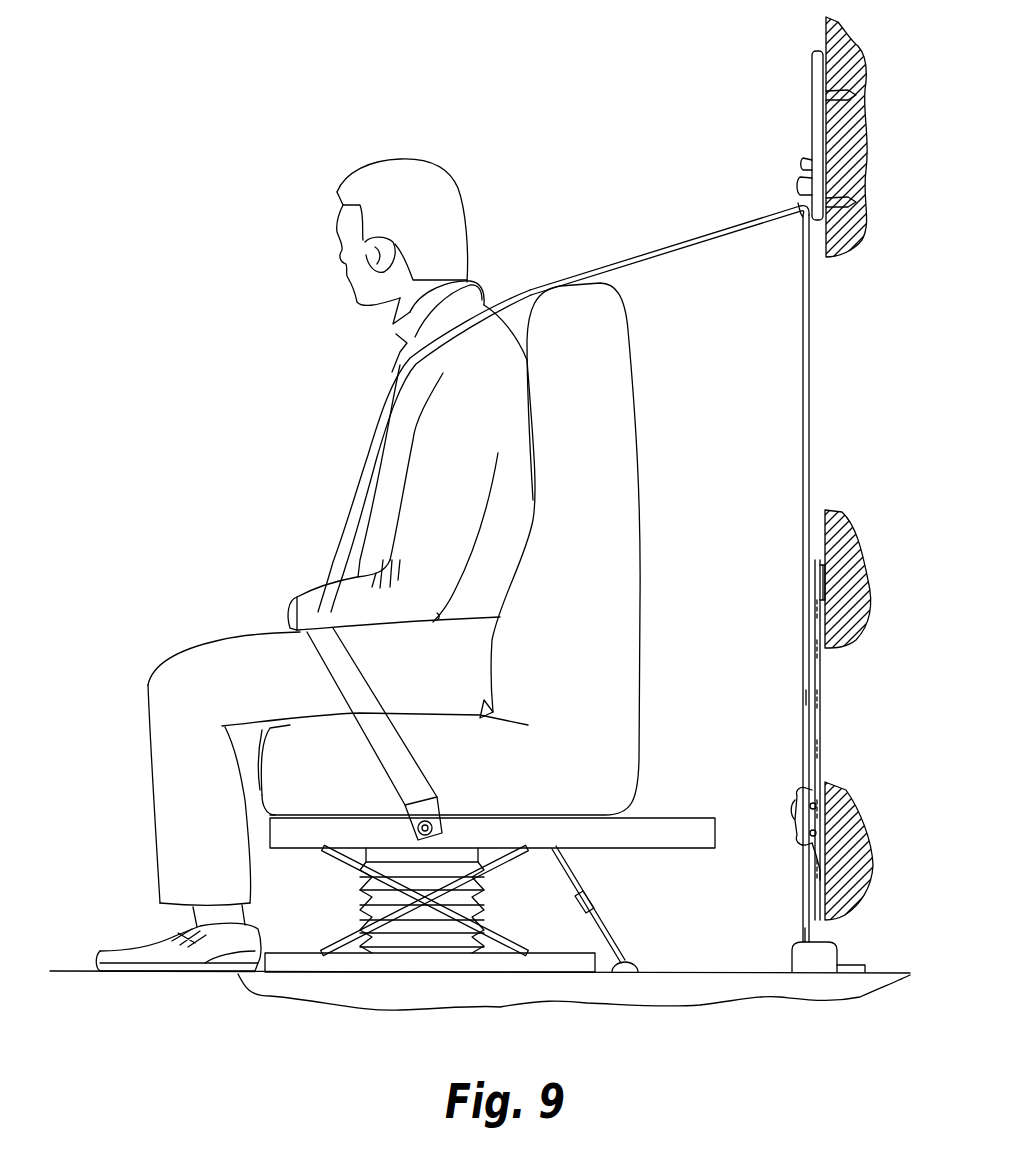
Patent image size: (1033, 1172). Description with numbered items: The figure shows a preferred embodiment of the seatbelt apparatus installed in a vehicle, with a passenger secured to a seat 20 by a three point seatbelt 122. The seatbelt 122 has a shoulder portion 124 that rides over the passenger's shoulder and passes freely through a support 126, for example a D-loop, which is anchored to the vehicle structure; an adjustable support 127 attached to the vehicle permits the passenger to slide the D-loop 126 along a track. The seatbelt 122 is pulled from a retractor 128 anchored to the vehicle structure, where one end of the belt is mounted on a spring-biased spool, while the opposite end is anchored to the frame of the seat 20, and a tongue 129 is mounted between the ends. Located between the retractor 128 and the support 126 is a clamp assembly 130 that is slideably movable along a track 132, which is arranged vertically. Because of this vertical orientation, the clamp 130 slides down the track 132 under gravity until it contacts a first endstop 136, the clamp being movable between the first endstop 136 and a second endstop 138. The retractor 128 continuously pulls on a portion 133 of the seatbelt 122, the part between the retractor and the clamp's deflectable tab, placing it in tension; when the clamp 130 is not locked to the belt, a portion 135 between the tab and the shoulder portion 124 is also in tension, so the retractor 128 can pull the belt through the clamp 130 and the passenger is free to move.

The seat 20 is at (573, 362).
The three point seatbelt 122 is at (328, 552).
The shoulder portion 124 is at (648, 243).
The support 126 is at (800, 213).
The adjustable support 127 is at (812, 135).
The retractor 128 is at (807, 959).
The buckle 129 is at (420, 832).
The clamp assembly 130 is at (797, 796).
The track 132 is at (820, 722).
The portion of seatbelt 133 is at (805, 928).
The portion of seatbelt 135 is at (808, 697).
The first endstop 136 is at (810, 870).
The second endstop 138 is at (822, 583).